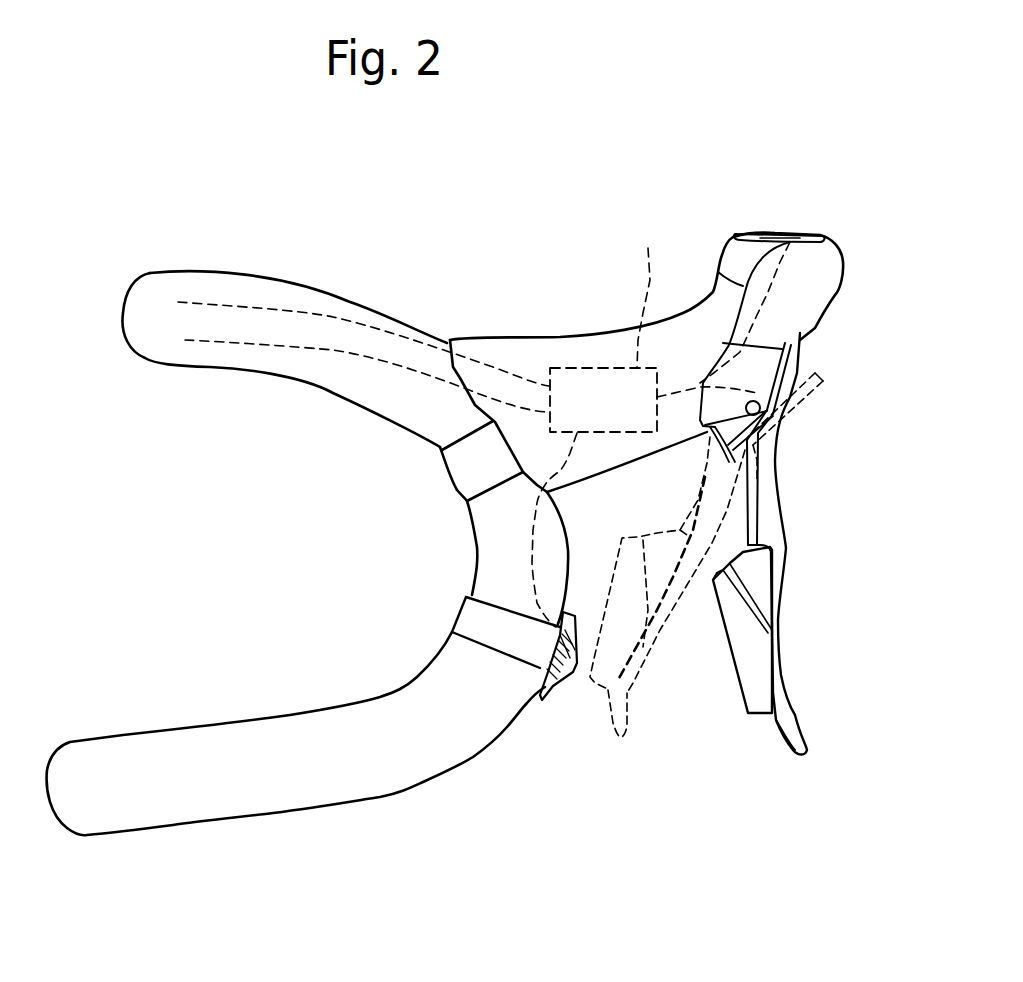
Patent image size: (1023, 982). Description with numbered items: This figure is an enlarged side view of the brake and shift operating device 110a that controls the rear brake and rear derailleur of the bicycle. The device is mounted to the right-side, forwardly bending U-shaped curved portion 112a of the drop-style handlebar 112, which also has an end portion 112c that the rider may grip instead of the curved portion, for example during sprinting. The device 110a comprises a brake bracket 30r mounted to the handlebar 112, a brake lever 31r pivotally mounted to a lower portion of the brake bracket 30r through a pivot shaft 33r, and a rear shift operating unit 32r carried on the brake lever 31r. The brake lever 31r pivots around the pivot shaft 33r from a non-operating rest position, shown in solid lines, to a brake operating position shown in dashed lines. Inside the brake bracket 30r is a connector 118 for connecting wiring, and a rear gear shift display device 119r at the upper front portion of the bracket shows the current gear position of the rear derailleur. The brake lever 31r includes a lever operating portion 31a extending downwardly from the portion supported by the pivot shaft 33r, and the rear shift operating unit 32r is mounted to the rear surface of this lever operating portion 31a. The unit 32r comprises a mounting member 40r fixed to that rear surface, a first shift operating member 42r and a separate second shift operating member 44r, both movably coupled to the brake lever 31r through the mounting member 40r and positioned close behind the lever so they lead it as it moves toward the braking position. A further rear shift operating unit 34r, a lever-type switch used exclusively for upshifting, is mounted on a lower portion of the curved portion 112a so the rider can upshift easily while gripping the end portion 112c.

The drop-style handlebar 112 is at (262, 268).
The curved portion 112a is at (563, 555).
The end portion 112c is at (198, 777).
The connector 118 is at (613, 312).
The rear gear shift display device 119r is at (777, 230).
The brake and shift operating device 110a is at (826, 233).
The brake bracket 30r is at (562, 337).
The lever operating portion 31a is at (793, 518).
The brake lever 31r is at (826, 739).
The rear shift operating unit 32r is at (667, 610).
The pivot shaft 33r is at (790, 383).
The rear shift operating unit 34r is at (560, 695).
The mounting member 40r is at (747, 497).
The first shift operating member 42r is at (753, 575).
The second shift operating member 44r is at (733, 610).